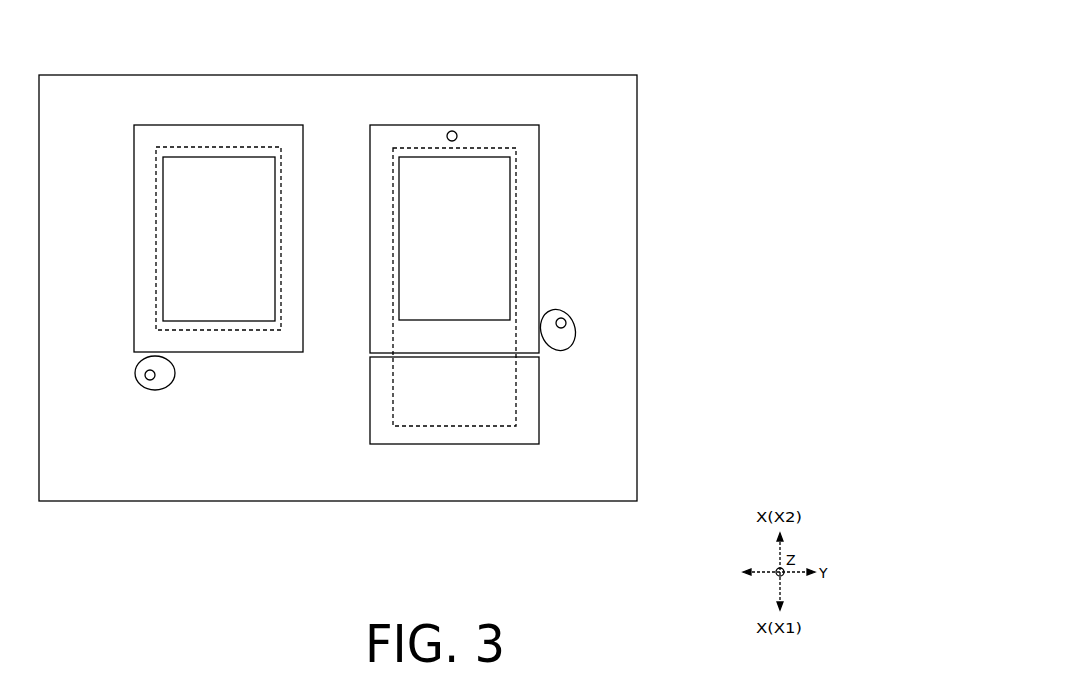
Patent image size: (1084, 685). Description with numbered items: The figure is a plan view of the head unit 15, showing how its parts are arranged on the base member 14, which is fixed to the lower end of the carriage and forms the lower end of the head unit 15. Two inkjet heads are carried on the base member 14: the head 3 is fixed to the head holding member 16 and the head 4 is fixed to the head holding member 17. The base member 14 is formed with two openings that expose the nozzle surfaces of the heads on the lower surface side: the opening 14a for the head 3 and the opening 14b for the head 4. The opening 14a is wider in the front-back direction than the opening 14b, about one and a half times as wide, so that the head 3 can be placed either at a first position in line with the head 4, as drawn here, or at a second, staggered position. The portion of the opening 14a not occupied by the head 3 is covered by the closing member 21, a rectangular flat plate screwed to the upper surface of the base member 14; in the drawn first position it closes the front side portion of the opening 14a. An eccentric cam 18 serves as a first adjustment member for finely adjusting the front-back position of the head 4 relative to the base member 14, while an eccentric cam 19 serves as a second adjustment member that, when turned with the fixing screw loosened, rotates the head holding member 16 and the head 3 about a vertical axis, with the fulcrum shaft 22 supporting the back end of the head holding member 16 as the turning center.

The head unit 15 is at (399, 257).
The base member 14 is at (638, 258).
The head holding member 17 is at (134, 160).
The head holding member 16 is at (540, 172).
The head 4 is at (160, 247).
The head 3 is at (513, 240).
The opening 14a is at (405, 190).
The opening 14b is at (272, 268).
The eccentric cam 18 is at (157, 390).
The eccentric cam 19 is at (557, 352).
The closing member 21 is at (370, 400).
The fulcrum shaft 22 is at (450, 130).